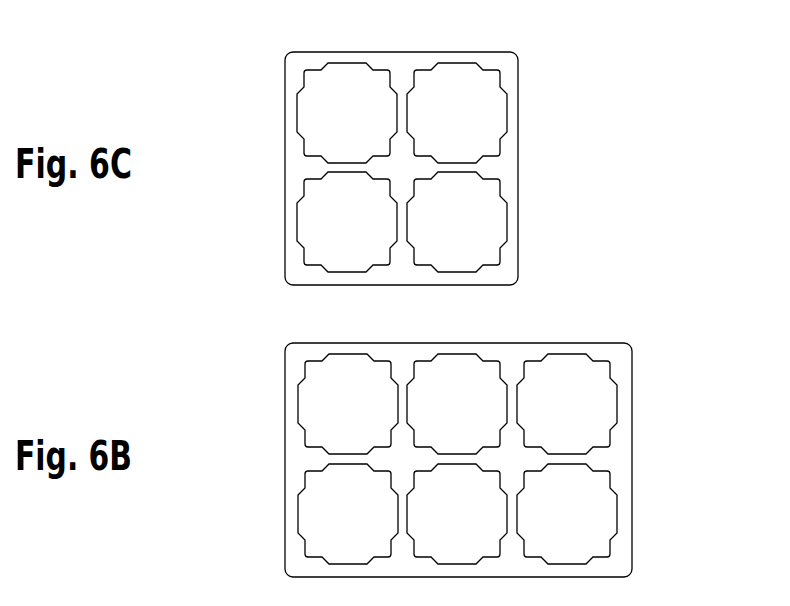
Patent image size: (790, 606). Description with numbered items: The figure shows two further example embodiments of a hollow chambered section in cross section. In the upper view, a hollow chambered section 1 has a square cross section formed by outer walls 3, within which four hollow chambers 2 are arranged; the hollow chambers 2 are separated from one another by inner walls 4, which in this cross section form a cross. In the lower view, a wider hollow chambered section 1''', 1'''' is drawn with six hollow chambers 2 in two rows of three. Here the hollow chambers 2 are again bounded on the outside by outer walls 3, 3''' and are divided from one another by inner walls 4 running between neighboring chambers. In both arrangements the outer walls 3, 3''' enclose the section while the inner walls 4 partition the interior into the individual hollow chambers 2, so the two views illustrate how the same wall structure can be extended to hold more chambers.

In FIG. 6C, the hollow chambered section 1 is at (447, 146).
In FIG. 6B, the hollow chambered section 1''' is at (515, 437).
In FIG. 6B, the hollow chambered section 1'''' is at (730, 598).
In FIG. 6C, the hollow chamber 2 is at (338, 126).
In FIG. 6B, the hollow chamber 2 is at (339, 419).
In FIG. 6C, the outer wall 3 is at (401, 165).
In FIG. 6B, the outer wall 3 is at (455, 472).
In FIG. 6B, the outer wall 3''' is at (443, 454).
In FIG. 6C, the inner wall 4 is at (399, 115).
In FIG. 6B, the inner wall 4 is at (399, 405).